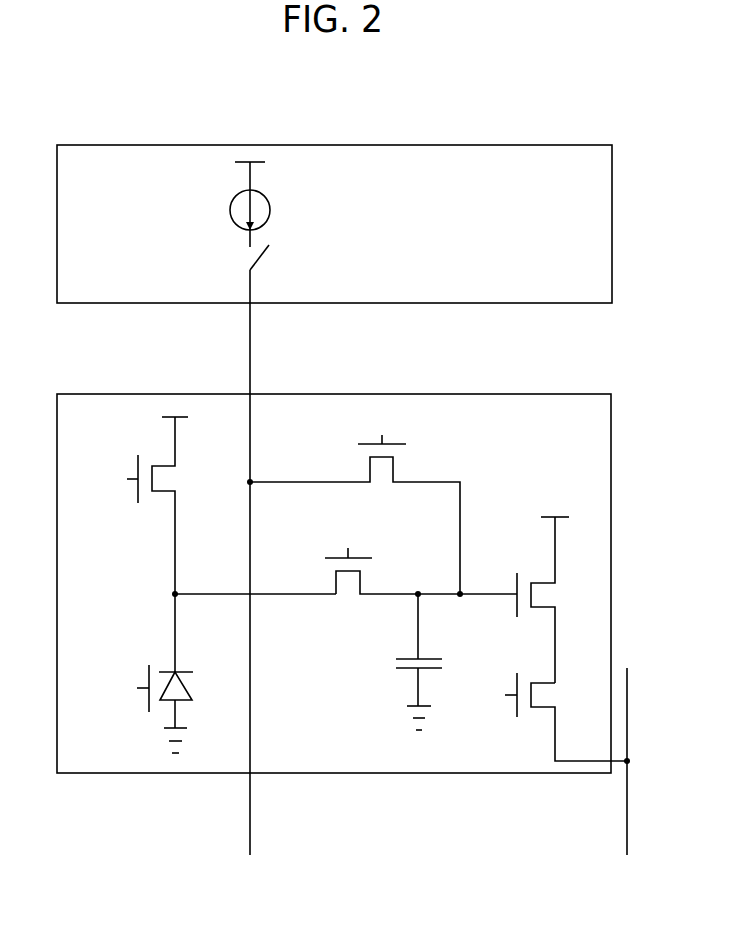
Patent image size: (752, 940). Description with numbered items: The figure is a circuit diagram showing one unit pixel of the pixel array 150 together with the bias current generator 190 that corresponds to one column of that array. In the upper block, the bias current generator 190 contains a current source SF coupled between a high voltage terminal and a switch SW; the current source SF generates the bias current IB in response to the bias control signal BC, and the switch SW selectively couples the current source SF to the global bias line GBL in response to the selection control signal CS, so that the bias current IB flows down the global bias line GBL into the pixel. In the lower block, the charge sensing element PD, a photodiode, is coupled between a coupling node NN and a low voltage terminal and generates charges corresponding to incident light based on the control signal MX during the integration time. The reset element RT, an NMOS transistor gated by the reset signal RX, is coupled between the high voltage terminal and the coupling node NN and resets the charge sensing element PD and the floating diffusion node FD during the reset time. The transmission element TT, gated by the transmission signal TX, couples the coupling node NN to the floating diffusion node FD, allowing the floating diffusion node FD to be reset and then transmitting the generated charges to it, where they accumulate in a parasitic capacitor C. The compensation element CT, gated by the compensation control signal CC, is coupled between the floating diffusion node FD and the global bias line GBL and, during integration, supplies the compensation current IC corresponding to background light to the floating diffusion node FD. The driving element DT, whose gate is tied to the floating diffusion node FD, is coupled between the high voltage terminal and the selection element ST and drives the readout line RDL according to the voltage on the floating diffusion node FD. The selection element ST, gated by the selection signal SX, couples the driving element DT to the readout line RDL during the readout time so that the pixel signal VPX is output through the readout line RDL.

The bias current generator 190 is at (565, 145).
The pixel array 150 is at (565, 394).
The current source SF is at (236, 204).
The switch SW is at (241, 265).
The bias control signal BC is at (270, 210).
The selection control signal CS is at (275, 262).
The global bias line GBL is at (249, 349).
The bias current IB is at (264, 332).
The reset signal RX is at (117, 479).
The reset element RT is at (169, 505).
The compensation control signal CC is at (382, 424).
The compensation element CT is at (355, 525).
The compensation current IC is at (473, 493).
The transmission signal TX is at (348, 539).
The transmission element TT is at (377, 596).
The coupling node NN is at (239, 594).
The floating diffusion node FD is at (462, 581).
The driving element DT is at (548, 600).
The parasitic capacitor C is at (409, 662).
The selection signal SX is at (497, 694).
The selection element ST is at (572, 717).
The control signal MX is at (127, 688).
The charge sensing element PD is at (192, 673).
The readout line RDL is at (628, 712).
The pixel signal VPX is at (608, 805).